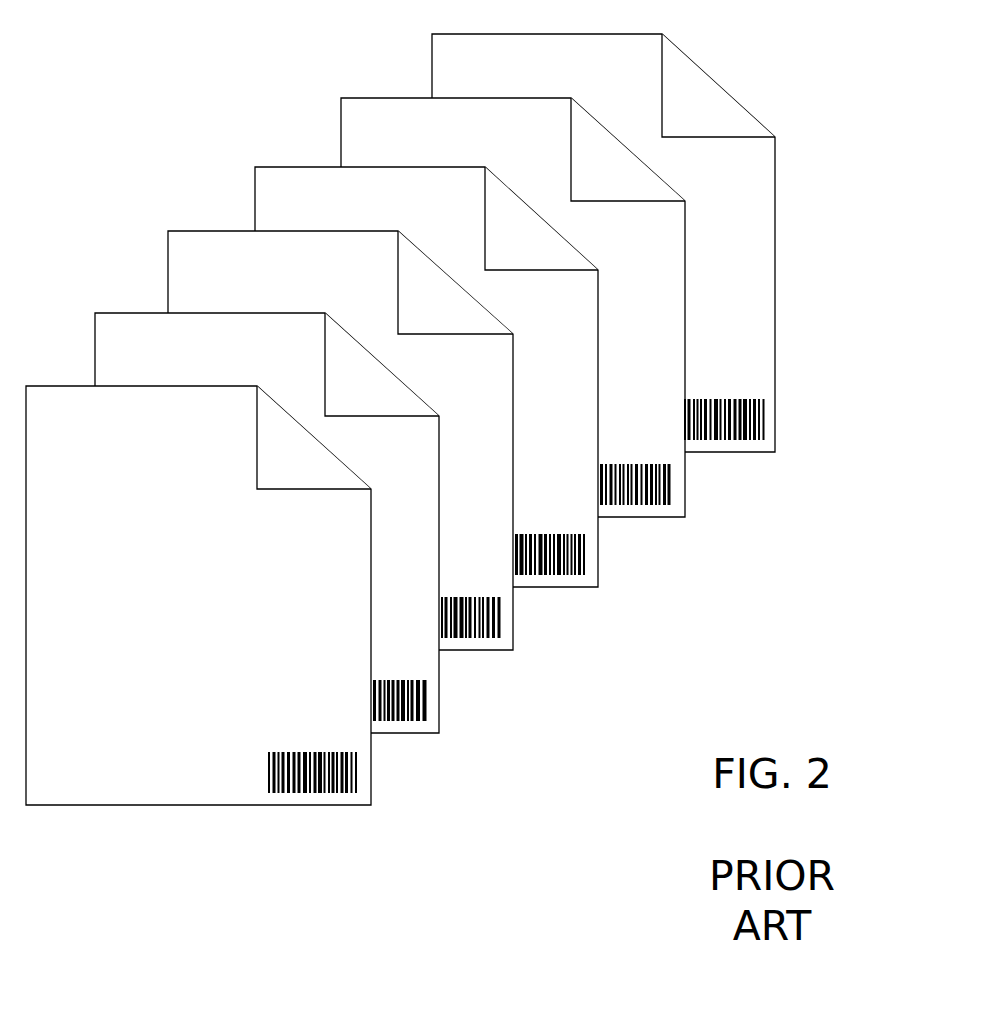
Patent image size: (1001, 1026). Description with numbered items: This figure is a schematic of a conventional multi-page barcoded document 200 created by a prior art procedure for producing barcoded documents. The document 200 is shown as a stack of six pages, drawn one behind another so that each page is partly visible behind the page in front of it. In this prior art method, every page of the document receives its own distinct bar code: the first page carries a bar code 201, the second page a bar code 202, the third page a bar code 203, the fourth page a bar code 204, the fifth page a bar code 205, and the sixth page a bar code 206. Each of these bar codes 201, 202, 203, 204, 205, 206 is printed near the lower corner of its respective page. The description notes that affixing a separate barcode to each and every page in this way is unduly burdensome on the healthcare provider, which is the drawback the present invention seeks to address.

The stack of document pages 200 is at (240, 100).
The bar code 201 is at (372, 765).
The bar code 202 is at (437, 713).
The bar code 203 is at (505, 624).
The bar code 204 is at (590, 558).
The bar code 205 is at (677, 491).
The bar code 206 is at (745, 421).